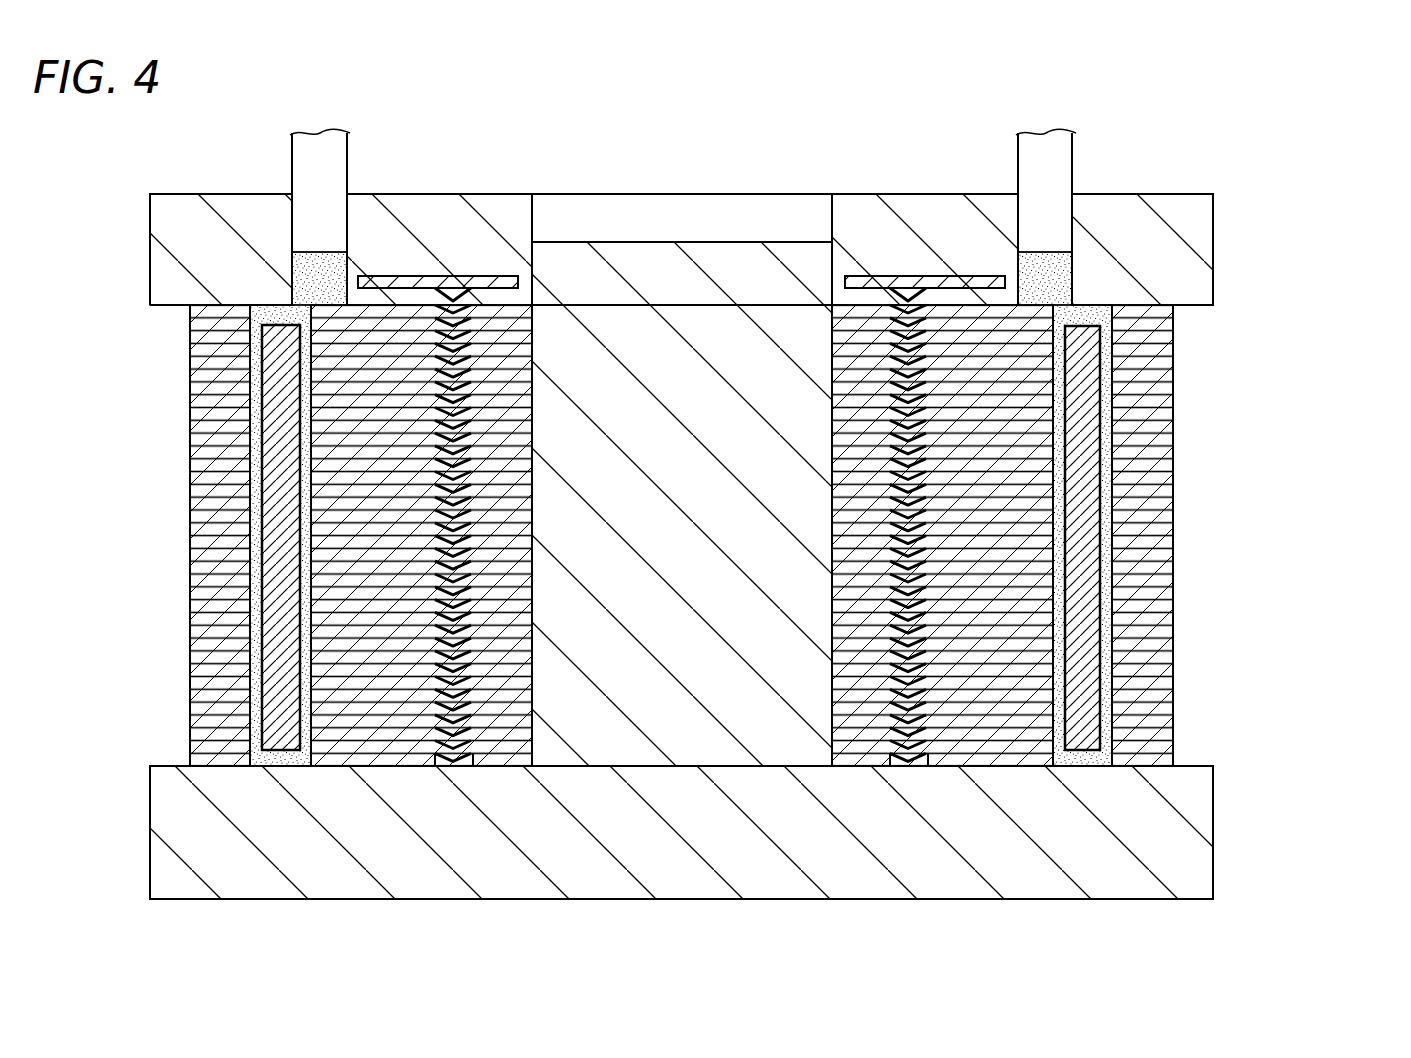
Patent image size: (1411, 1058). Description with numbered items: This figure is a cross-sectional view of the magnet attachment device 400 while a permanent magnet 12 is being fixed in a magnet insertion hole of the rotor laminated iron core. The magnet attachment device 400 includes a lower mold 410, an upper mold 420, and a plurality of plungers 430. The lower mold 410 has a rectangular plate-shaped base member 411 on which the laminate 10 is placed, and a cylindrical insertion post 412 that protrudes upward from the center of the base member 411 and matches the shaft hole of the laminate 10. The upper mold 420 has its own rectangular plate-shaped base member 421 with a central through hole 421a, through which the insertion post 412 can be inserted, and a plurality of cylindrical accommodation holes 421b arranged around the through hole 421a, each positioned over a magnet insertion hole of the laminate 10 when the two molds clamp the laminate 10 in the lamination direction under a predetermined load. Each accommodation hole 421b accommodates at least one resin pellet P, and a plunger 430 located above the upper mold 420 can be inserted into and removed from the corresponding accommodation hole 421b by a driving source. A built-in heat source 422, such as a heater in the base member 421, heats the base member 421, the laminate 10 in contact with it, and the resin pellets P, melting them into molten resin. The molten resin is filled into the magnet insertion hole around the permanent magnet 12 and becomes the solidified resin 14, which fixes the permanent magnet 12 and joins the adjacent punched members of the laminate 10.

The magnet attachment device 400 is at (1320, 160).
The upper mold 420 is at (1238, 238).
The base member 421 is at (1192, 213).
The through hole 421a is at (533, 220).
The accommodation hole 421b is at (293, 275).
The built-in heat source 422 is at (470, 275).
The plunger 430 is at (348, 155).
The resin pellet P is at (325, 263).
The lower mold 410 is at (1245, 780).
The base member 411 is at (1185, 875).
The insertion post 412 is at (700, 253).
The laminate 10 is at (1222, 618).
The permanent magnet 12 is at (262, 377).
The solidified resin 14 is at (258, 762).